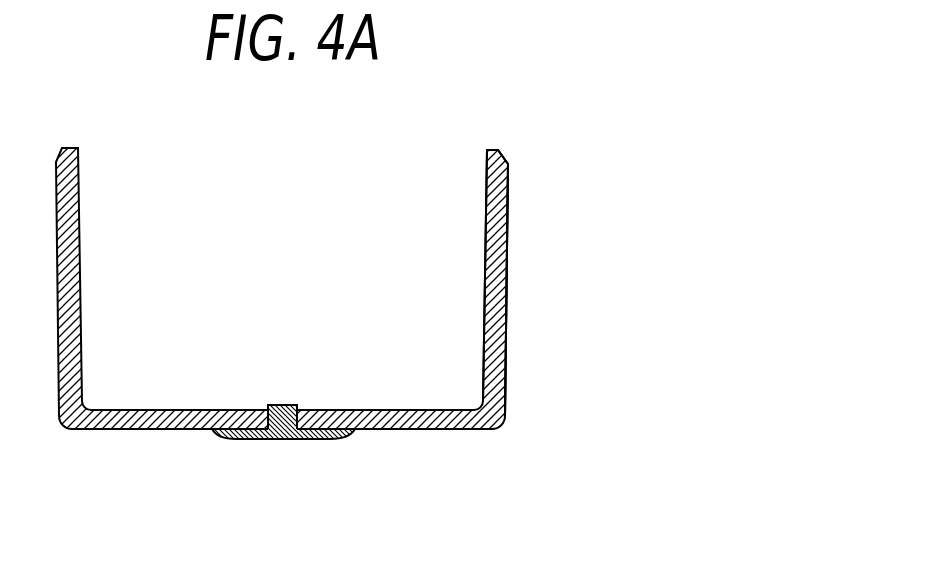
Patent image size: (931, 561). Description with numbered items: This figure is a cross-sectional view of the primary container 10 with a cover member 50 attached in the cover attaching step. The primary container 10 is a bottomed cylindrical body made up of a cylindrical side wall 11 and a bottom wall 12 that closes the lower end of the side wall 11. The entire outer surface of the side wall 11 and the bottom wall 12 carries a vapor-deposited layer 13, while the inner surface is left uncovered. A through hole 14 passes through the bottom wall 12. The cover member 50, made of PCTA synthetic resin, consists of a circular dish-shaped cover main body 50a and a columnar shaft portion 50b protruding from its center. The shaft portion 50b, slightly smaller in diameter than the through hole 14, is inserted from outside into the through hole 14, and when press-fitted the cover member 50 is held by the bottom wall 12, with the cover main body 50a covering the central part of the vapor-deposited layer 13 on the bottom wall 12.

The primary container 10 is at (507, 260).
The side wall 11 is at (497, 227).
The bottom wall 12 is at (413, 420).
The vapor-deposited layer 13 is at (506, 294).
The through hole 14 is at (293, 408).
The cover member 50 is at (283, 434).
The cover main body 50a is at (243, 440).
The shaft portion 50b is at (279, 405).